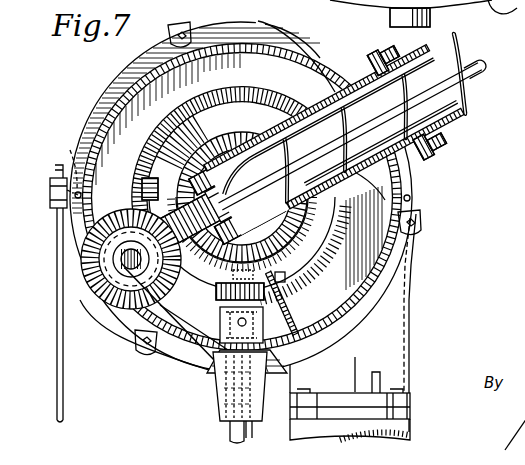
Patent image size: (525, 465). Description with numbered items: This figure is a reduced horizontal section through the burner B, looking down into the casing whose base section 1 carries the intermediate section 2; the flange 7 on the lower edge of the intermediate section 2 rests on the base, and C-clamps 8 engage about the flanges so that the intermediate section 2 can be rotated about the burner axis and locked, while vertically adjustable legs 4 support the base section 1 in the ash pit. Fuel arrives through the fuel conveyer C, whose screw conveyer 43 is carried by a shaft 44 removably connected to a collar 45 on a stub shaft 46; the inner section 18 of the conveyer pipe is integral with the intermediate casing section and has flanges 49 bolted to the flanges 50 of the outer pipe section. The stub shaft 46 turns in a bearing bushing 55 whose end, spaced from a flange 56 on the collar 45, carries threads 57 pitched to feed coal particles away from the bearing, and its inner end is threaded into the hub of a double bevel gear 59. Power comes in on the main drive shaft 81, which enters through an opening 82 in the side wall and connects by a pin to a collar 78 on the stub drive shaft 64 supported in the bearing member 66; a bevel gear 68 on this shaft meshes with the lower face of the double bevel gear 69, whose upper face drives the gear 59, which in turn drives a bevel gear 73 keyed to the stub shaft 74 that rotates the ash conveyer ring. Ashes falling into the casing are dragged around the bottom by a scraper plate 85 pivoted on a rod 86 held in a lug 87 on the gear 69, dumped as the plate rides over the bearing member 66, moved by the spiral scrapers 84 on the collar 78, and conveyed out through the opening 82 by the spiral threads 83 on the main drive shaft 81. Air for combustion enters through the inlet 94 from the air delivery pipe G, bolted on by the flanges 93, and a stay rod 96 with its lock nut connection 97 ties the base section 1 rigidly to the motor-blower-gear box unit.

The base section 1 is at (195, 352).
The intermediate section 2 is at (289, 40).
The vertically adjustable legs 4 is at (74, 184).
The flange 7 is at (90, 128).
The C-clamps 8 is at (188, 30).
The inner section of the fuel conveyer pipe 18 is at (378, 189).
The screw conveyer 43 is at (309, 104).
The shaft 44 is at (333, 139).
The collar 45 is at (347, 124).
The stub shaft 46 is at (184, 223).
The flanges 49 is at (384, 53).
The flanges 50 is at (463, 150).
The bearing bushing 55 is at (249, 242).
The flange 56 is at (242, 197).
The threads 57 is at (237, 195).
The double bevel gear 59 is at (148, 190).
The stub drive shaft 64 is at (230, 312).
The bearing member 66 is at (222, 327).
The bevel gear 68 is at (222, 292).
The double bevel gear 69 is at (314, 260).
The bevel gear 73 is at (118, 290).
The stub shaft 74 is at (99, 293).
The collar 78 is at (283, 362).
The main drive shaft 81 is at (229, 430).
The opening 82 is at (254, 422).
The spiral threads 83 is at (222, 396).
The spiral scrapers 84 is at (222, 376).
The scraper plate 85 is at (293, 300).
The rod 86 is at (288, 280).
The lug 87 is at (242, 243).
The flanges 93 is at (411, 404).
The inlet 94 is at (411, 312).
The stay rod 96 is at (57, 386).
The adjustable lock nut connection 97 is at (53, 205).
The burner B is at (96, 92).
The fuel conveyer C is at (472, 88).
The air delivery pipe G is at (412, 428).